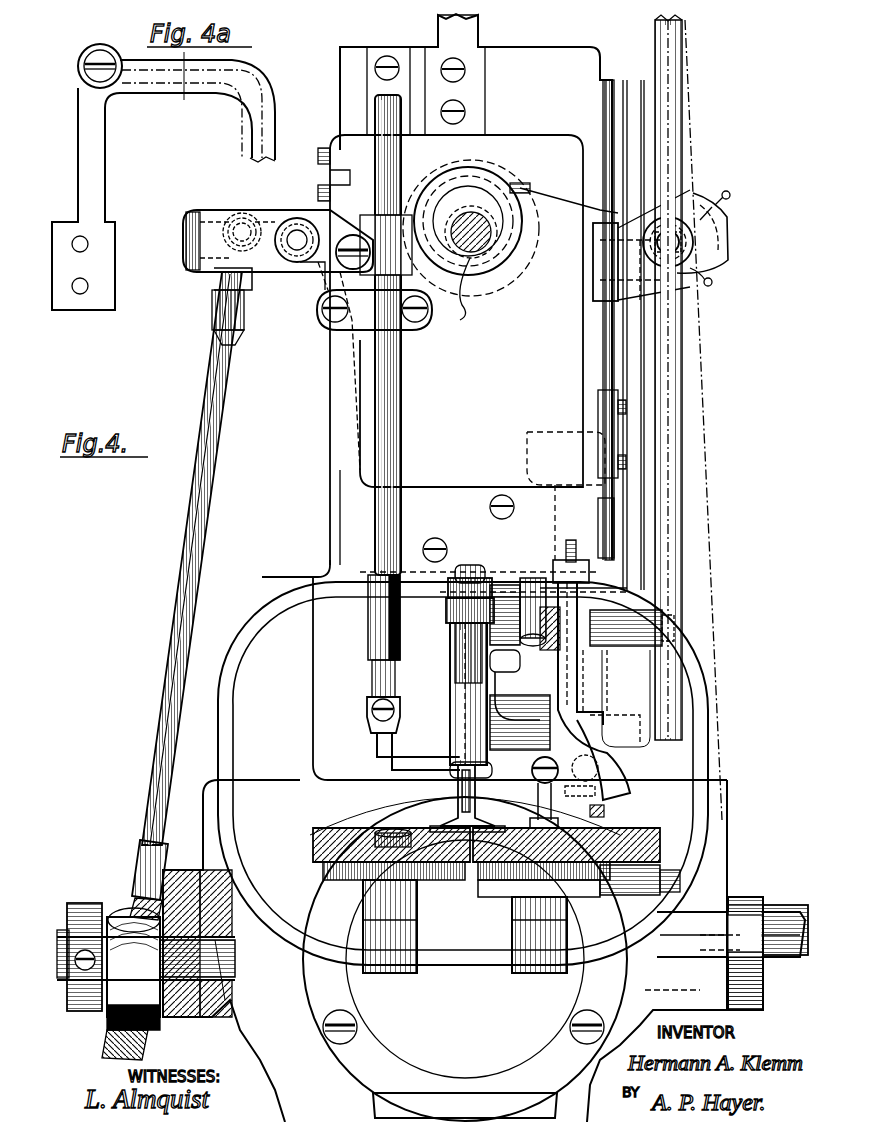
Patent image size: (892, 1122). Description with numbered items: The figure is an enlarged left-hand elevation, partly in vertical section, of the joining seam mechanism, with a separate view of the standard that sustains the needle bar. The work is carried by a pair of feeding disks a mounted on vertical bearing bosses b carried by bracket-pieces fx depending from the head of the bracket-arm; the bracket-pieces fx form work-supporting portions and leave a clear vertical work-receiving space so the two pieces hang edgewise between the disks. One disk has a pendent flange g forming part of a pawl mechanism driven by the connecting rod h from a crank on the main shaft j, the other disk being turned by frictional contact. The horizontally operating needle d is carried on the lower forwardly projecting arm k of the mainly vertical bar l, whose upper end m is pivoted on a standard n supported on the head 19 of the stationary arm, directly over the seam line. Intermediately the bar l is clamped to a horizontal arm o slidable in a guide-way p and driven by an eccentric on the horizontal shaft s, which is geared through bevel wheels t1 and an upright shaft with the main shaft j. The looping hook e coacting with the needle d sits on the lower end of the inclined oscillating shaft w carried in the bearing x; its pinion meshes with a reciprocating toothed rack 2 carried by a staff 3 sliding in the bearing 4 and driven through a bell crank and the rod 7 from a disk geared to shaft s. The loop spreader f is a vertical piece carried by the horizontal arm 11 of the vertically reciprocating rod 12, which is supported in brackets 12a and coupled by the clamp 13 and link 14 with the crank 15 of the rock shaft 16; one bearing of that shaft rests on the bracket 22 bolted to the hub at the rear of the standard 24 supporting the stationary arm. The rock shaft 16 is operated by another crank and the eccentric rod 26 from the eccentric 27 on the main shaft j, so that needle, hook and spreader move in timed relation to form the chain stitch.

In FIG. 4A, the upper end m is at (110, 45).
In FIG. 4A, the standard n is at (96, 140).
In FIG. 4, the standard n is at (470, 33).
In FIG. 4A, the bar l is at (258, 113).
In FIG. 4, the bar l is at (675, 498).
In FIG. 4, the head 19 is at (538, 62).
In FIG. 4, the brackets 12a is at (398, 160).
In FIG. 4, the vertically reciprocating rod 12 is at (396, 455).
In FIG. 4, the standard 24 is at (338, 475).
In FIG. 4, the rod 7 is at (476, 192).
In FIG. 4, the horizontal shaft s is at (462, 293).
In FIG. 4, the pendent flange g is at (553, 215).
In FIG. 4, the guide-way p is at (661, 245).
In FIG. 4, the horizontal arm o is at (681, 251).
In FIG. 4, the bracket 22 is at (183, 254).
In FIG. 4, the rock shaft 16 is at (297, 232).
In FIG. 4, the crank 15 is at (305, 272).
In FIG. 4, the link 14 is at (320, 312).
In FIG. 4, the clamp 13 is at (352, 325).
In FIG. 4, the eccentric rod 26 is at (213, 466).
In FIG. 4, the eccentric 27 is at (110, 1010).
In FIG. 4, the main shaft j is at (200, 1018).
In FIG. 4, the connecting rod h is at (690, 932).
In FIG. 4, the bracket-pieces fx is at (237, 706).
In FIG. 4, the oscillating shaft w is at (470, 566).
In FIG. 4, the staff 3 is at (447, 617).
In FIG. 4, the reciprocating toothed rack 2 is at (505, 620).
In FIG. 4, the bearing x is at (450, 709).
In FIG. 4, the bearing 4 is at (525, 675).
In FIG. 4, the horizontal arm 11 is at (415, 768).
In FIG. 4, the loop spreader f is at (480, 805).
In FIG. 4, the looping hook e is at (450, 820).
In FIG. 4, the needle d is at (535, 815).
In FIG. 4, the lower arm k is at (578, 790).
In FIG. 4, the bevel wheels t1 is at (623, 787).
In FIG. 4, the feeding disks a is at (313, 845).
In FIG. 4, the vertical bearing bosses b is at (417, 900).